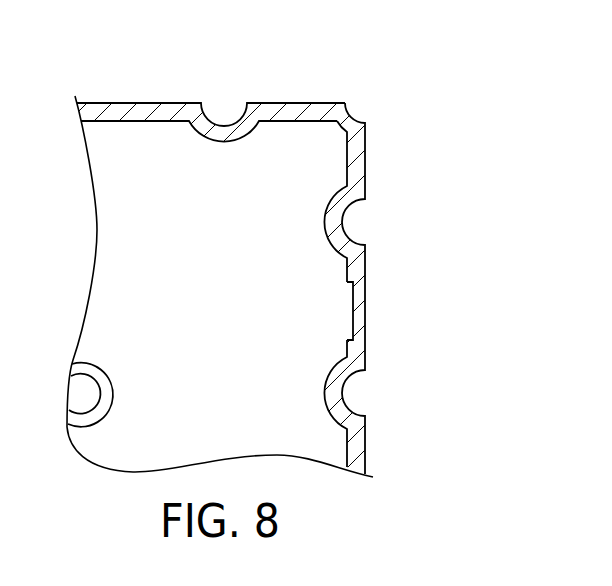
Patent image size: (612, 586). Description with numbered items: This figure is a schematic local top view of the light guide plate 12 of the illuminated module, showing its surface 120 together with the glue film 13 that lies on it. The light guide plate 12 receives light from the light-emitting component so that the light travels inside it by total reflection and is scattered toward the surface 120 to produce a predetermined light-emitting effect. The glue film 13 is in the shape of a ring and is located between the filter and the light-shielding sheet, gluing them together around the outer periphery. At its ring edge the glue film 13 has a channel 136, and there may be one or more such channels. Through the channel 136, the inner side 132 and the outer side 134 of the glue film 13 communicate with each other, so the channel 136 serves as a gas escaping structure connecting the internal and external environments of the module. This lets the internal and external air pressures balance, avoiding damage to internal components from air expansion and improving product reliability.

The light guide plate 12 is at (183, 41).
The surface 120 is at (173, 148).
The glue film 13 is at (445, 67).
The inner side 132 is at (323, 130).
The outer side 134 is at (322, 96).
The channel 136 is at (364, 312).